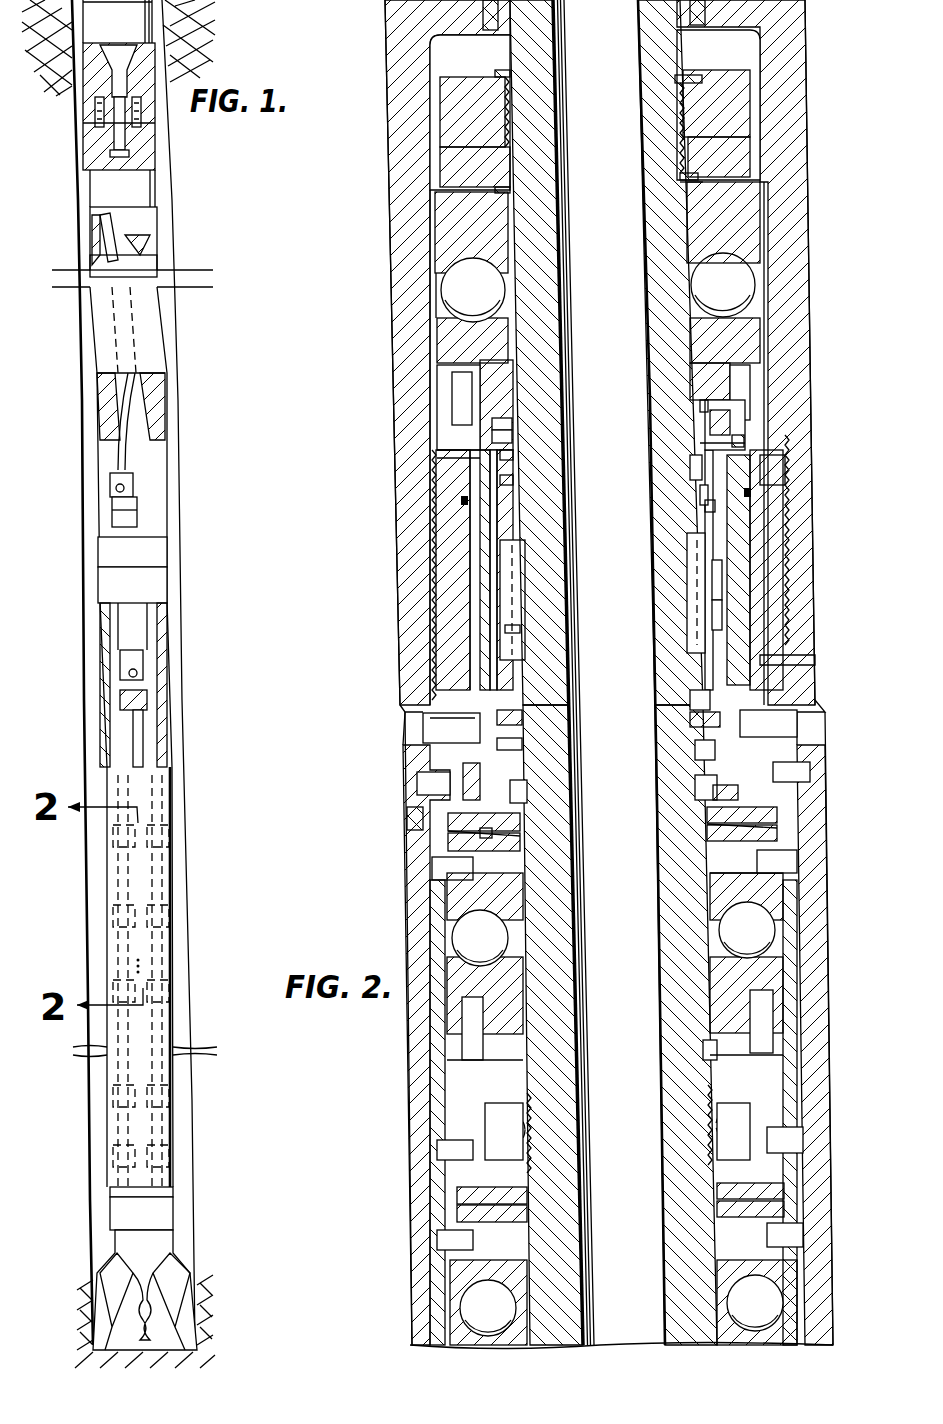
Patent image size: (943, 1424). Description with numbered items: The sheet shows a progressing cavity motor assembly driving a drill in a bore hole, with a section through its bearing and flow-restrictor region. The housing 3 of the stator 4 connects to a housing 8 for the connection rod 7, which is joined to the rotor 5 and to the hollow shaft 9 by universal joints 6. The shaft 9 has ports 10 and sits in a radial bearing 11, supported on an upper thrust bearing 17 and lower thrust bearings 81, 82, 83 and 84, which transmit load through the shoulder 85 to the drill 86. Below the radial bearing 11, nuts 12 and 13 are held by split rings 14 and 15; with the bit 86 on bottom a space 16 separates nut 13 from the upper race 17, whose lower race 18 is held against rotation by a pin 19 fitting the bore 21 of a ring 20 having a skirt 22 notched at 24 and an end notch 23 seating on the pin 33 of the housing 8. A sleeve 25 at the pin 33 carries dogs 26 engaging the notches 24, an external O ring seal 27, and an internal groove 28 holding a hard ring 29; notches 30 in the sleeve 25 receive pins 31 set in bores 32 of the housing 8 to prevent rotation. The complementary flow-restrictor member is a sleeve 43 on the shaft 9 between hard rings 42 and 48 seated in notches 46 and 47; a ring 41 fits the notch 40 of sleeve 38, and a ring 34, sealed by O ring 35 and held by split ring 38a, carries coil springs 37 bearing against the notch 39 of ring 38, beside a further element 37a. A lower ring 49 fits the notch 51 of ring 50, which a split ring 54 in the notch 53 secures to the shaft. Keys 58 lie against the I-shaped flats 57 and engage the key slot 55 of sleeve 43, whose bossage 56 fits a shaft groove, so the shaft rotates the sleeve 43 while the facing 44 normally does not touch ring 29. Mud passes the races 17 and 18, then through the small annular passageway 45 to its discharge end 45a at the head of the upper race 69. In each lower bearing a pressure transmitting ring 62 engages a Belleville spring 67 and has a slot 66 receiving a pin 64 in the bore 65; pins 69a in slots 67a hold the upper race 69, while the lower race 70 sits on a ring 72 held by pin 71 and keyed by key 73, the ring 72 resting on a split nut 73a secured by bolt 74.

In FIG. 1, the housing 3 is at (160, 228).
In FIG. 1, the stator 4 is at (150, 402).
In FIG. 1, the rotor 5 is at (115, 465).
In FIG. 1, the universal joints 6 is at (105, 490).
In FIG. 1, the connection rod 7 is at (137, 520).
In FIG. 1, the housing 8 is at (105, 690).
In FIG. 2, the housing 8 is at (780, 222).
In FIG. 1, the hollow shaft 9 is at (147, 697).
In FIG. 2, the hollow shaft 9 is at (650, 110).
In FIG. 1, the ports 10 is at (145, 722).
In FIG. 1, the radial bearing 11 is at (172, 775).
In FIG. 2, the radial bearing 11 is at (700, 12).
In FIG. 2, the nut 12 is at (730, 80).
In FIG. 2, the nut 13 is at (735, 152).
In FIG. 2, the split ring 14 is at (700, 78).
In FIG. 2, the split ring 15 is at (690, 165).
In FIG. 2, the space 16 is at (735, 183).
In FIG. 1, the upper thrust bearing race 17 is at (110, 835).
In FIG. 2, the upper thrust bearing race 17 is at (700, 232).
In FIG. 2, the lower race 18 is at (497, 338).
In FIG. 2, the pin 19 is at (520, 360).
In FIG. 2, the ring 20 is at (745, 378).
In FIG. 2, the bore 21 is at (455, 400).
In FIG. 2, the skirt 22 is at (450, 462).
In FIG. 2, the end notch 23 is at (440, 448).
In FIG. 2, the notches 24 is at (790, 470).
In FIG. 2, the sleeve 25 is at (750, 503).
In FIG. 2, the dogs 26 is at (462, 500).
In FIG. 2, the O ring seal 27 is at (465, 512).
In FIG. 2, the internal circumambient groove 28 is at (460, 575).
In FIG. 1, the hard material ring 29 is at (118, 895).
In FIG. 2, the hard material ring 29 is at (445, 650).
In FIG. 2, the notches 30 is at (790, 665).
In FIG. 2, the pins 31 is at (785, 725).
In FIG. 2, the bores 32 is at (800, 690).
In FIG. 2, the pin 33 is at (450, 545).
In FIG. 2, the ring 34 is at (510, 420).
In FIG. 2, the O ring 35 is at (700, 428).
In FIG. 2, the coil springs 37 is at (505, 432).
In FIG. 2, the ring 37a is at (740, 440).
In FIG. 2, the sleeve 38 is at (695, 465).
In FIG. 2, the split ring 38a is at (705, 405).
In FIG. 2, the notch 39 is at (700, 443).
In FIG. 2, the notch 40 is at (515, 455).
In FIG. 2, the complementary ring 41 is at (700, 495).
In FIG. 2, the ring 42 is at (510, 480).
In FIG. 2, the sleeve 43 is at (520, 505).
In FIG. 2, the facing 44 is at (715, 580).
In FIG. 2, the annular passageway 45 is at (740, 607).
In FIG. 2, the discharge end 45a is at (492, 833).
In FIG. 2, the notch 46 is at (705, 505).
In FIG. 2, the notch 47 is at (700, 705).
In FIG. 2, the ring 48 is at (520, 720).
In FIG. 2, the lower ring 49 is at (690, 730).
In FIG. 2, the ring 50 is at (695, 760).
In FIG. 2, the notch 51 is at (520, 745).
In FIG. 2, the notch 53 is at (700, 790).
In FIG. 2, the split ring 54 is at (720, 800).
In FIG. 2, the key slot 55 is at (720, 610).
In FIG. 2, the bossage 56 is at (520, 612).
In FIG. 2, the I-shaped flat section 57 is at (520, 630).
In FIG. 2, the keys 58 is at (515, 578).
In FIG. 2, the pressure transmitting ring 62 is at (445, 860).
In FIG. 2, the pin 64 is at (430, 775).
In FIG. 2, the bore 65 is at (430, 725).
In FIG. 2, the slot 66 is at (415, 815).
In FIG. 2, the Belleville spring 67 is at (465, 840).
In FIG. 2, the notch 67a is at (800, 840).
In FIG. 2, the upper race 69 is at (720, 895).
In FIG. 2, the pins 69a is at (800, 872).
In FIG. 2, the lower race 70 is at (775, 962).
In FIG. 2, the pin 71 is at (765, 1010).
In FIG. 2, the ring 72 is at (780, 1063).
In FIG. 2, the key 73 is at (710, 1052).
In FIG. 2, the split nut 73a is at (722, 1122).
In FIG. 2, the bolt 74 is at (740, 1160).
In FIG. 1, the lower thrust bearing 81 is at (165, 928).
In FIG. 2, the lower thrust bearing 81 is at (715, 938).
In FIG. 1, the lower thrust bearing 82 is at (168, 975).
In FIG. 2, the lower thrust bearing 82 is at (790, 1270).
In FIG. 1, the lower thrust bearing 83 is at (110, 1095).
In FIG. 1, the lower thrust bearing 84 is at (117, 1158).
In FIG. 1, the shoulder 85 is at (110, 1187).
In FIG. 1, the drill 86 is at (150, 1250).